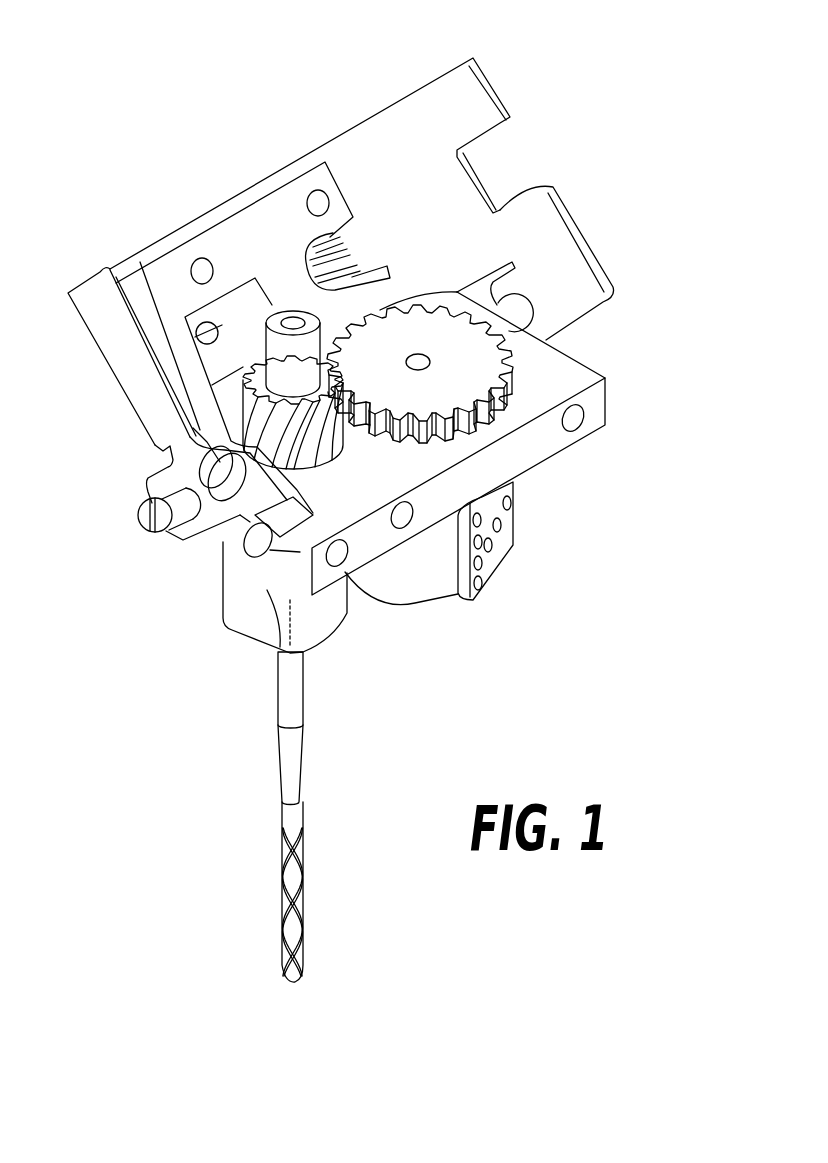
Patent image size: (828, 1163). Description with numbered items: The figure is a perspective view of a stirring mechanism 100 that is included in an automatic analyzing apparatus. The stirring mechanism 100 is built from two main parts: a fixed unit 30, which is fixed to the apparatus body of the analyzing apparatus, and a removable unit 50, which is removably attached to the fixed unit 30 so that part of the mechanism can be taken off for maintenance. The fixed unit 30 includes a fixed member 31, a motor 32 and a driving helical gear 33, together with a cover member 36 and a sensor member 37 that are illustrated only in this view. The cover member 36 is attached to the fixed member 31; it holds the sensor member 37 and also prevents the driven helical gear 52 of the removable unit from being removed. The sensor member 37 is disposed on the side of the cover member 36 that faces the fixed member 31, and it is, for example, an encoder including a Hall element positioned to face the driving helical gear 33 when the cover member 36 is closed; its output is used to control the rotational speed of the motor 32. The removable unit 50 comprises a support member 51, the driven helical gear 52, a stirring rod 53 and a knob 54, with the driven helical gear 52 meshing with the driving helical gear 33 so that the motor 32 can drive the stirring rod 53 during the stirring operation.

The stirring mechanism 100 is at (198, 44).
The fixed unit 30 is at (605, 101).
The fixed member 31 is at (605, 402).
The motor 32 is at (513, 523).
The driving helical gear 33 is at (517, 363).
The cover member 36 is at (588, 232).
The sensor member 37 is at (340, 190).
The removable unit 50 is at (160, 628).
The support member 51 is at (278, 688).
The driven helical gear 52 is at (247, 407).
The stirring rod 53 is at (283, 890).
The knob 54 is at (263, 353).